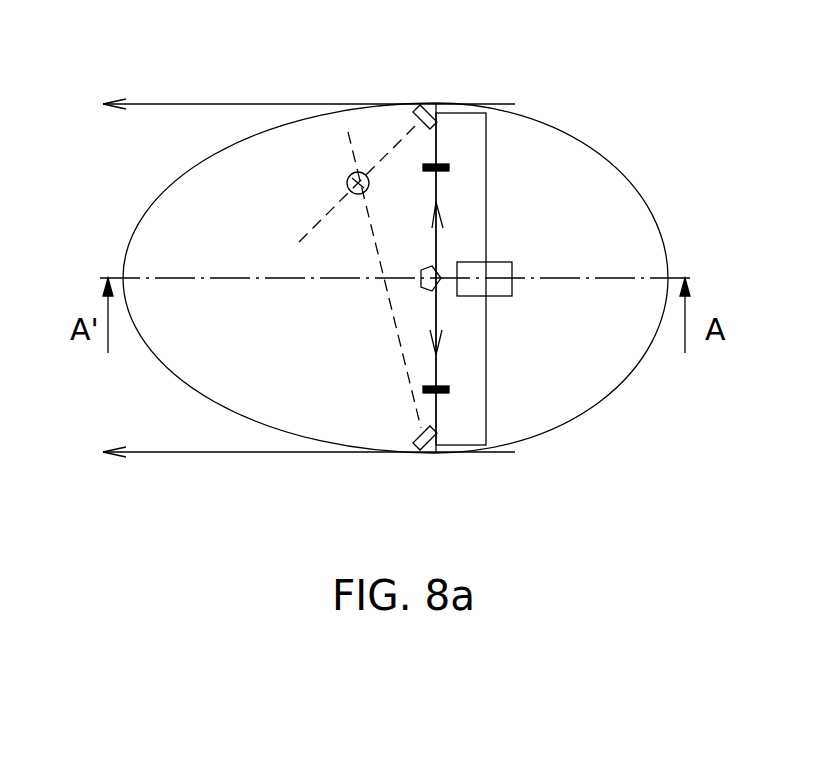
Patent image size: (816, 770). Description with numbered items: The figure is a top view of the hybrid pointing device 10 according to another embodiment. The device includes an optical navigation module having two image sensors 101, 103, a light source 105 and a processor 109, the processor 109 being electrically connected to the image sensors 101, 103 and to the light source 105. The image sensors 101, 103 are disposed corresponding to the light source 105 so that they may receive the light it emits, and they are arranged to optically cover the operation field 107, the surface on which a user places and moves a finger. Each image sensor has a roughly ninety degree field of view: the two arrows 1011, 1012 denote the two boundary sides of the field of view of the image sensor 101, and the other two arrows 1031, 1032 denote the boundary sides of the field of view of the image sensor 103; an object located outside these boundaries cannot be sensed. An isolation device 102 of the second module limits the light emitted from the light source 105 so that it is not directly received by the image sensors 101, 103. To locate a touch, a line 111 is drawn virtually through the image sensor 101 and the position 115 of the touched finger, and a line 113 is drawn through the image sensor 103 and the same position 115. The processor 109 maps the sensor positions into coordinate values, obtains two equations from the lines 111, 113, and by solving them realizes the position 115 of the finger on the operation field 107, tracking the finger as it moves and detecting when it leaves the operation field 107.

The hybrid pointing device 10 is at (675, 57).
The image sensor 101 is at (421, 109).
The isolation device 102 is at (449, 166).
The image sensor 103 is at (423, 450).
The light source 105 is at (438, 284).
The operation field 107 is at (292, 165).
The processor 109 is at (505, 262).
The line 111 is at (385, 147).
The line 113 is at (407, 378).
The position of the touched finger 115 is at (369, 187).
The arrow 1011 is at (110, 102).
The arrow 1012 is at (442, 340).
The arrow 1031 is at (125, 456).
The arrow 1032 is at (440, 208).